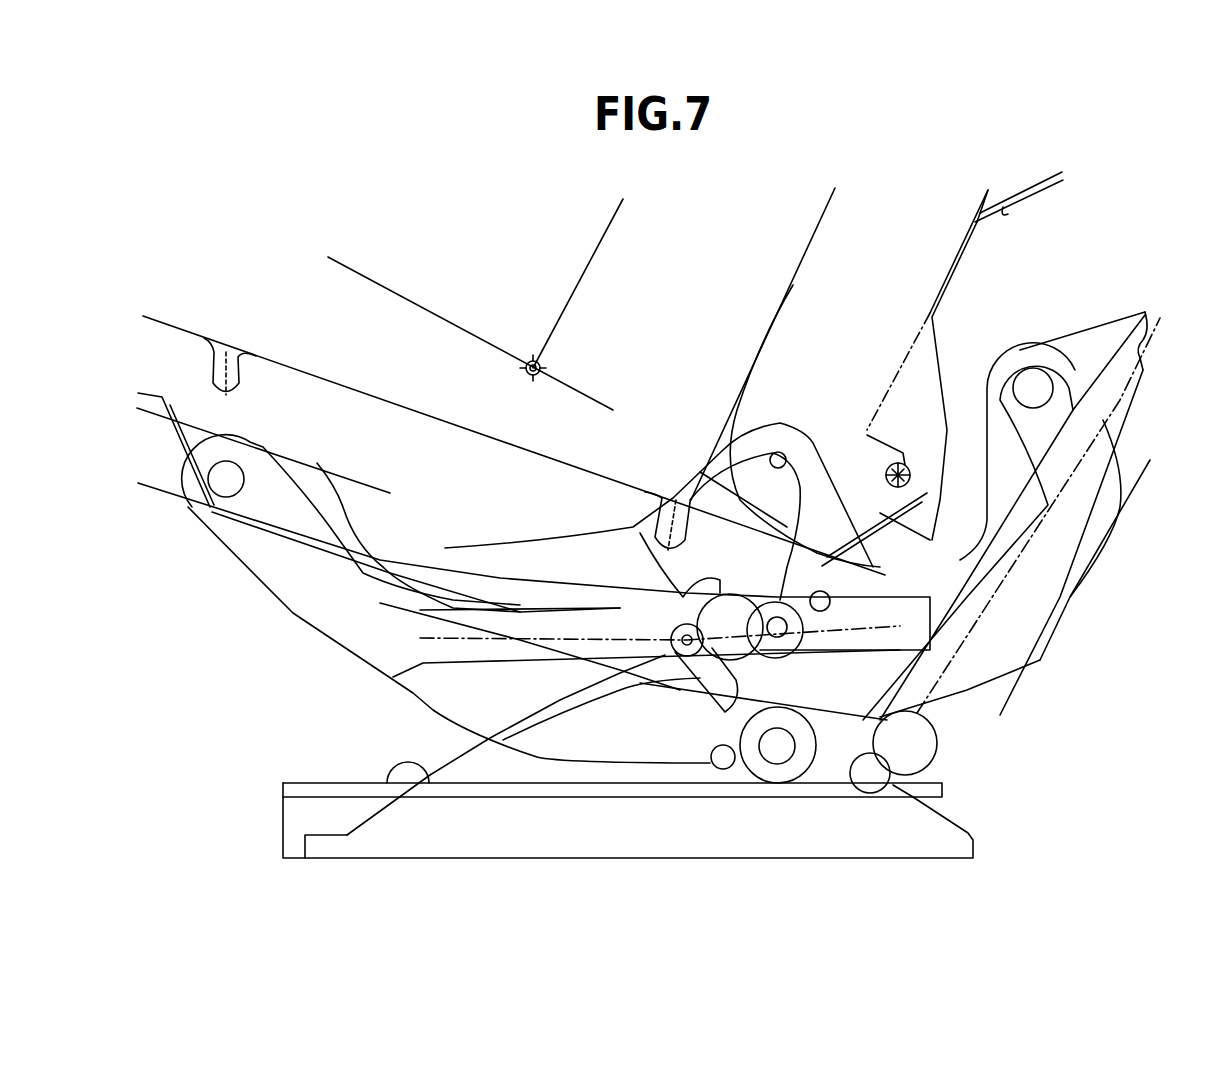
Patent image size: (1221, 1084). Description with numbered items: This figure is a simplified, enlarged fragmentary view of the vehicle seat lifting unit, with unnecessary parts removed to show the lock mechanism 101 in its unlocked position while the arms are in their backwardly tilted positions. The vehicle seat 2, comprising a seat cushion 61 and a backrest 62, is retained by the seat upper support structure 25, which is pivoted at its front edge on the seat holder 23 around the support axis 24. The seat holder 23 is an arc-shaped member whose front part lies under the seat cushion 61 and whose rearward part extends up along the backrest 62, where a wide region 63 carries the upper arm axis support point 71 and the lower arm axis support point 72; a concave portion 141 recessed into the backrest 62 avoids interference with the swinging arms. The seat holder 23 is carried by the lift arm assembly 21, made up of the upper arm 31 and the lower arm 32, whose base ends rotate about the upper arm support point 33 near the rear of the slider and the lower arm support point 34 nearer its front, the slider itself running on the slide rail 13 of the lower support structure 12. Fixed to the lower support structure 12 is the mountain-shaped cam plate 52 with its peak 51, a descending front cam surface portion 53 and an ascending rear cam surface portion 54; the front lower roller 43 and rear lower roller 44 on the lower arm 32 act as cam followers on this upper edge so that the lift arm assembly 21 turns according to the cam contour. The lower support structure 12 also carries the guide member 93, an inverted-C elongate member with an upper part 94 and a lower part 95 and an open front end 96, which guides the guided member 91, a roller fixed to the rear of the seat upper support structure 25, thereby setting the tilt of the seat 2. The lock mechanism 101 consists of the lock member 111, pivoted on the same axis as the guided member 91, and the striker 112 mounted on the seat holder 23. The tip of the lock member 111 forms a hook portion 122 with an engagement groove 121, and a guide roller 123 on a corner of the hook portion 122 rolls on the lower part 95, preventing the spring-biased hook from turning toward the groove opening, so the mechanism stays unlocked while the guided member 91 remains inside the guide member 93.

The vehicle seat 2 is at (790, 243).
The lower support structure 12 is at (272, 822).
The slide rail 13 is at (312, 807).
The lift arm assembly 21 is at (1103, 243).
The seat holder 23 is at (297, 620).
The support axis 24 is at (227, 497).
The seat upper support structure 25 is at (168, 504).
The upper arm 31 is at (1112, 370).
The lower arm 32 is at (1025, 373).
The upper arm support point 33 is at (870, 795).
The lower arm support point 34 is at (798, 770).
The front lower roller 43 is at (687, 603).
The rear lower roller 44 is at (957, 757).
The peak 51 is at (611, 700).
The cam plate 52 is at (975, 826).
The front cam surface portion 53 is at (391, 785).
The rear cam surface portion 54 is at (840, 752).
The seat cushion 61 is at (377, 398).
The backrest 62 is at (793, 288).
The wide region 63 is at (1077, 350).
The upper arm axis support point 71 is at (1138, 330).
The lower arm axis support point 72 is at (1028, 380).
The guided member 91 is at (812, 636).
The guide member 93 is at (903, 587).
The upper part 94 is at (452, 608).
The lower part 95 is at (440, 660).
The open front end 96 is at (418, 623).
The lock mechanism 101 is at (688, 699).
The lock member 111 is at (470, 727).
The striker 112 is at (697, 743).
The engagement groove 121 is at (760, 693).
The hook portion 122 is at (880, 706).
The guide roller 123 is at (652, 639).
The concave portion 141 is at (1010, 208).